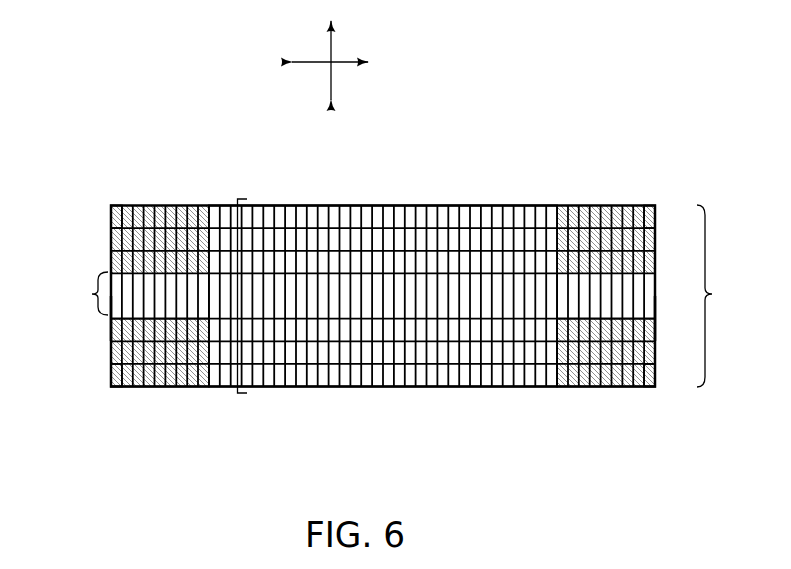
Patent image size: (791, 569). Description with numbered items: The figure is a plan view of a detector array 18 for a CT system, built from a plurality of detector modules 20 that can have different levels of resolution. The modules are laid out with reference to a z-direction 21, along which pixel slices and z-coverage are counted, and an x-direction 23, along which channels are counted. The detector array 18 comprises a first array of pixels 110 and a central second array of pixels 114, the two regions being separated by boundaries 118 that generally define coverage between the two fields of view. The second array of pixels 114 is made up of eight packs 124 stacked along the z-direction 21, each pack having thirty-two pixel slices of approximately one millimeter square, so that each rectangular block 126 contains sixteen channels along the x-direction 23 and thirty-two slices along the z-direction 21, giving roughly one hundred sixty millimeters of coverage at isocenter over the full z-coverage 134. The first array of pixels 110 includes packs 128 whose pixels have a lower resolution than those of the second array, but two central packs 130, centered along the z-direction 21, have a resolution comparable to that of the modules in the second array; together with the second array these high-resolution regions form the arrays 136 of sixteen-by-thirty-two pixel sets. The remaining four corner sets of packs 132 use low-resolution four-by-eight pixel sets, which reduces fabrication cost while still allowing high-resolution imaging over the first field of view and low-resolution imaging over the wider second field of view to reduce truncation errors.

The detector array 18 is at (607, 140).
The detector modules 20 is at (190, 205).
The z-direction 21 is at (331, 47).
The x-direction 23 is at (345, 63).
The first array of pixels 110 is at (153, 424).
The second array of pixels 114 is at (486, 410).
The boundaries 118 is at (208, 391).
The packs 124 is at (247, 199).
The rectangular block 126 is at (468, 242).
The packs 128 is at (125, 238).
The two central packs 130 is at (92, 294).
The four corner sets of packs 132 is at (140, 187).
The full z-coverage 134 is at (723, 296).
The arrays 136 is at (110, 319).